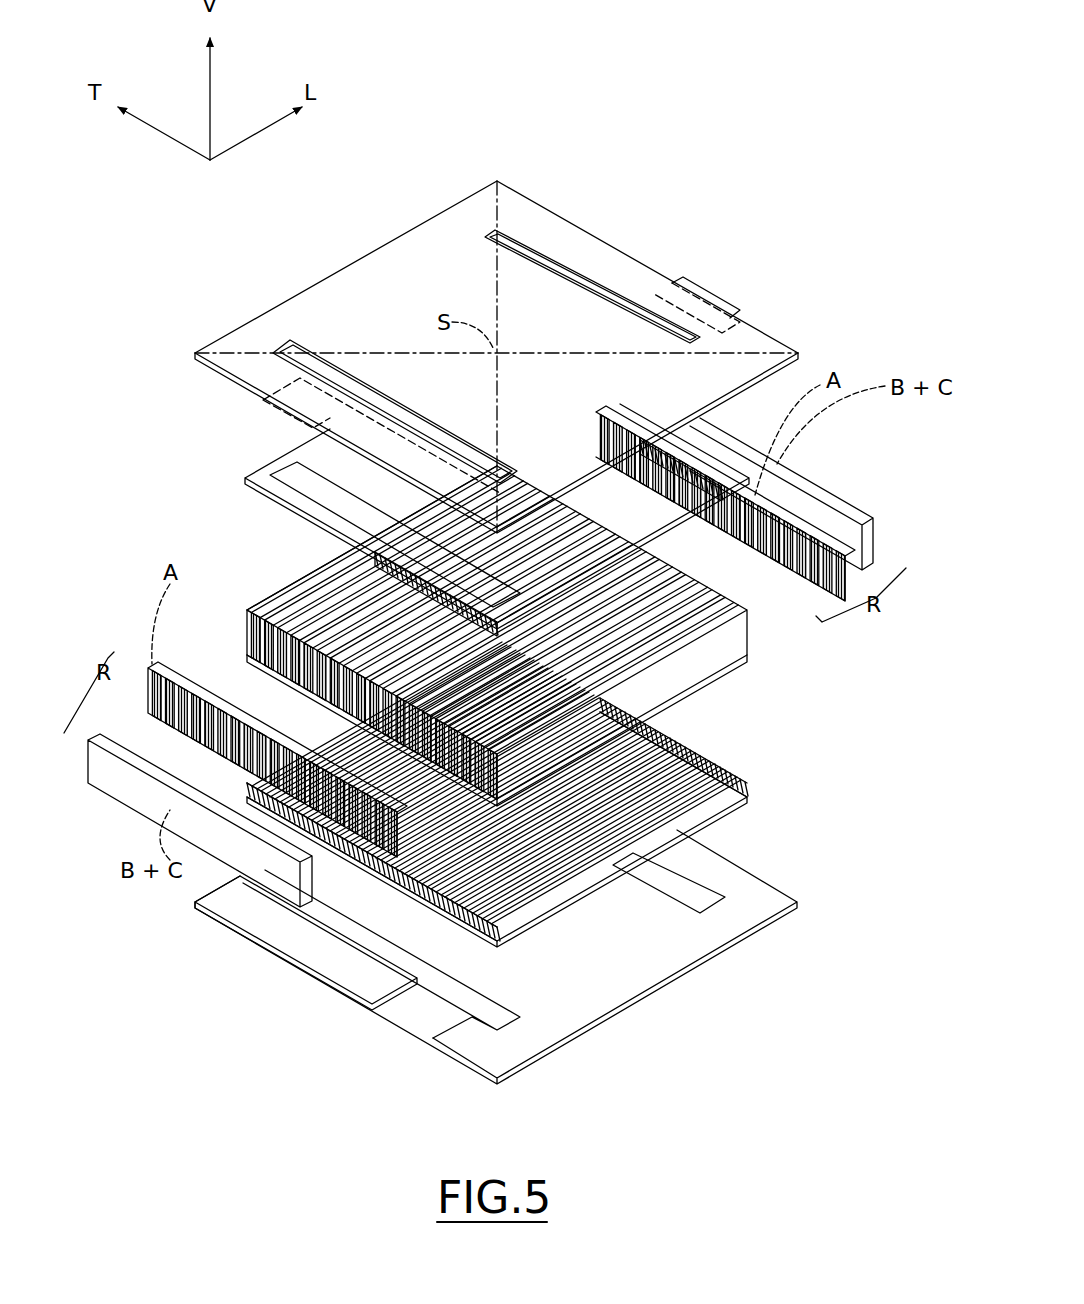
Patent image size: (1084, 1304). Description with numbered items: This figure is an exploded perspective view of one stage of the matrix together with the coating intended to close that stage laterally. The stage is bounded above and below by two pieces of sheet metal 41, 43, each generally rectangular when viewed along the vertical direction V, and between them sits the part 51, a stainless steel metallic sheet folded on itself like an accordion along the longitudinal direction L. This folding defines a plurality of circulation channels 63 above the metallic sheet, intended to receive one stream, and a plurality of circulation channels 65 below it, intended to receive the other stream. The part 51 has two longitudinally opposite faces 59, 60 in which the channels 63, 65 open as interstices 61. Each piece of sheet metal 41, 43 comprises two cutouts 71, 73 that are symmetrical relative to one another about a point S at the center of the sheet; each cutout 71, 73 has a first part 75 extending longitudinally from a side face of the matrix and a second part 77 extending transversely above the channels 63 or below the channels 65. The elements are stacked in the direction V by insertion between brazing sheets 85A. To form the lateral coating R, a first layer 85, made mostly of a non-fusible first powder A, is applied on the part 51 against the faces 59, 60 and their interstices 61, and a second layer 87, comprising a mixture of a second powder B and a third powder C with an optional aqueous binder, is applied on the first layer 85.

The piece of sheet metal 41 is at (764, 342).
The piece of sheet metal 43 is at (775, 900).
The part 51 is at (760, 656).
The longitudinally opposite face 59 is at (244, 660).
The longitudinally opposite face 60 is at (765, 625).
The interstices 61 is at (350, 744).
The circulation channels 63 is at (340, 604).
The circulation channels 65 is at (452, 835).
The cutout 71 is at (265, 425).
The cutout 73 is at (741, 290).
The first part of cutout 75 is at (693, 292).
The second part of cutout 77 is at (490, 230).
The first layer 85 is at (190, 666).
The brazing sheet 85A is at (635, 520).
The second layer 87 is at (125, 770).